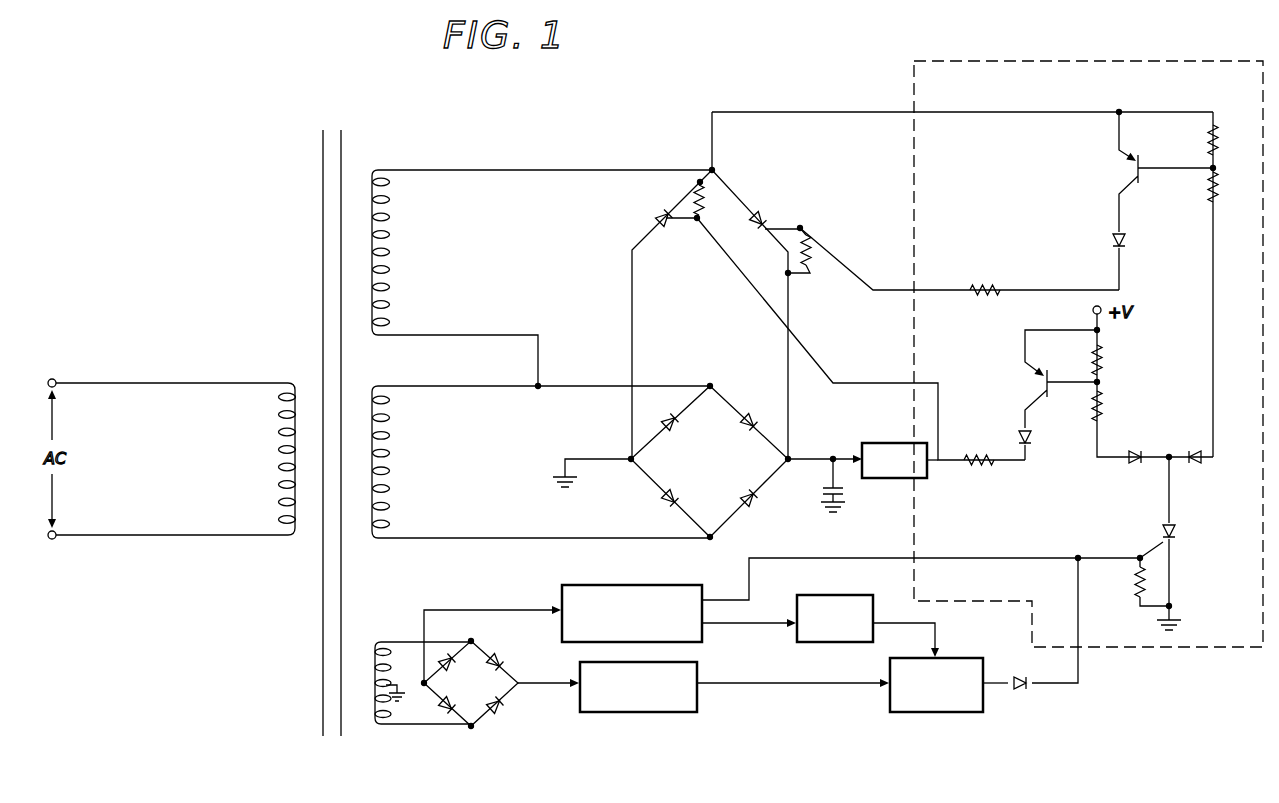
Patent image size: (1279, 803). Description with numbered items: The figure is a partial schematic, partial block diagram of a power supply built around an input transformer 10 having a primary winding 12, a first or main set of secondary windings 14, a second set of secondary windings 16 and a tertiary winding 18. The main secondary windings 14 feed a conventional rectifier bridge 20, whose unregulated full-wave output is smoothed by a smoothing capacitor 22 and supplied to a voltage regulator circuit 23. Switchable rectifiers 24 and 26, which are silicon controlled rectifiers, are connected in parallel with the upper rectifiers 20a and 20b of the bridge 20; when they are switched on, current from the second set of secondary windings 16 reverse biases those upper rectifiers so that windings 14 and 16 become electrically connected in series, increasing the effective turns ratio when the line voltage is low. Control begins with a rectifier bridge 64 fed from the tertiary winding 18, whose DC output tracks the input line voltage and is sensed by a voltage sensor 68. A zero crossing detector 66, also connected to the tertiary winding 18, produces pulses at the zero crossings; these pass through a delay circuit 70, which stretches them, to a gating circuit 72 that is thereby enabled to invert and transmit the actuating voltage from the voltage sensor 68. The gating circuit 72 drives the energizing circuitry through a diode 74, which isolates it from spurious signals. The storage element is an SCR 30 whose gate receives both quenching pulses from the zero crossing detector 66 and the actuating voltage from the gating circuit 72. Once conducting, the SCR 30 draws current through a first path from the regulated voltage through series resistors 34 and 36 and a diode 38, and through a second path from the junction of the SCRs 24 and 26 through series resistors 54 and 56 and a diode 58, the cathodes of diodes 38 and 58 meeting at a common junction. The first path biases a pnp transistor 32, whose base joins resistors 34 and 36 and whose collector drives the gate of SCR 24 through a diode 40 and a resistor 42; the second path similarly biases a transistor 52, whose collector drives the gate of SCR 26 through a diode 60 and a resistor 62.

The input transformer 10 is at (303, 280).
The primary winding 12 is at (290, 380).
The first set of secondary windings 14 is at (372, 541).
The second set of secondary windings 16 is at (374, 338).
The tertiary winding 18 is at (373, 727).
The rectifier bridge 20 is at (710, 462).
The upper rectifier 20a is at (679, 422).
The upper rectifier 20b is at (752, 418).
The smoothing capacitor 22 is at (845, 492).
The voltage regulator circuit 23 is at (882, 443).
The switchable rectifier 24 is at (656, 213).
The switchable rectifier 26 is at (758, 222).
The SCR 30 is at (1178, 534).
The transistor 32 is at (1067, 366).
The resistor 34 is at (1105, 360).
The resistor 36 is at (1106, 411).
The diode 38 is at (1133, 468).
The diode 40 is at (1034, 444).
The resistor 42 is at (980, 470).
The transistor 52 is at (1136, 161).
The resistor 54 is at (1217, 144).
The resistor 56 is at (1218, 195).
The diode 58 is at (1196, 470).
The diode 60 is at (1132, 240).
The resistor 62 is at (993, 278).
The rectifier bridge 64 is at (480, 696).
The zero crossing detector 66 is at (606, 585).
The voltage sensor 68 is at (630, 712).
The delay circuit 70 is at (840, 595).
The gating circuit 72 is at (940, 712).
The diode 74 is at (1019, 694).